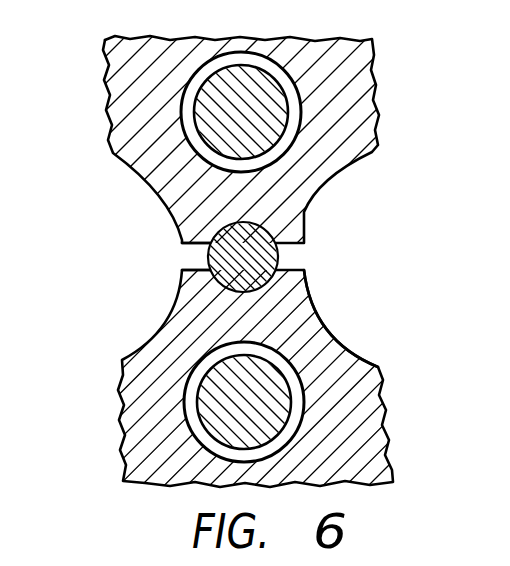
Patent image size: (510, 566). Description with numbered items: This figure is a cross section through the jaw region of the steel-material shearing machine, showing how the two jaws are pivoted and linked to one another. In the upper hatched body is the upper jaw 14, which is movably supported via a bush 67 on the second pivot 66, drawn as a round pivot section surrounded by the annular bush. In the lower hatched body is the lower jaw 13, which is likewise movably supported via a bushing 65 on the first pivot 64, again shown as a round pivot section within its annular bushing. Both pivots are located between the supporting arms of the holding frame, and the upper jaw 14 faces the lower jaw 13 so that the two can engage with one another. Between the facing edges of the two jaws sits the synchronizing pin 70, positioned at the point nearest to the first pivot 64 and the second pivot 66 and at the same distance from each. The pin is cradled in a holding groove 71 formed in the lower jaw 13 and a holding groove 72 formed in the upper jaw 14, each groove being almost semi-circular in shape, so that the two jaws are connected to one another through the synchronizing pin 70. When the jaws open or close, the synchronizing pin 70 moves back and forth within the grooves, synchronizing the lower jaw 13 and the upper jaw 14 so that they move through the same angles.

The upper jaw 14 is at (357, 63).
The lower jaw 13 is at (375, 415).
The second pivot 66 is at (205, 108).
The bush 67 is at (280, 148).
The first pivot 64 is at (215, 407).
The bushing 65 is at (327, 329).
The synchronizing pin 70 is at (257, 253).
The holding groove 71 is at (210, 265).
The holding groove 72 is at (210, 250).